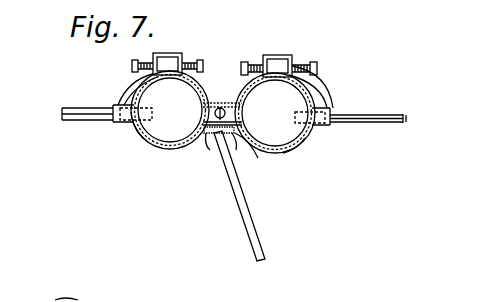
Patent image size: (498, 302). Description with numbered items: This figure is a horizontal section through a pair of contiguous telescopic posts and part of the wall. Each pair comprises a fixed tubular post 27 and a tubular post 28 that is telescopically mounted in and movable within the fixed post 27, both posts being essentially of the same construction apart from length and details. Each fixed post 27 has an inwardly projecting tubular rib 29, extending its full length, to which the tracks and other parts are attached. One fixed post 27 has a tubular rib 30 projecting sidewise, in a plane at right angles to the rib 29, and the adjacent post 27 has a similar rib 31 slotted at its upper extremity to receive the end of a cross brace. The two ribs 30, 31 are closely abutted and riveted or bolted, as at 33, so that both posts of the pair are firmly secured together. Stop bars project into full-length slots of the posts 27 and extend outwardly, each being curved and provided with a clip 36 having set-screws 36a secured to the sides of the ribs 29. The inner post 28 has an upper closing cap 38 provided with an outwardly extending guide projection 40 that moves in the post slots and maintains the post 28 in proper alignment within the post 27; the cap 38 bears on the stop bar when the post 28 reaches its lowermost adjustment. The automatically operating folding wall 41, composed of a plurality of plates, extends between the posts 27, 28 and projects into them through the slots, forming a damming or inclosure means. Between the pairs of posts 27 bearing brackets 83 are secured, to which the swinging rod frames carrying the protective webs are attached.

The fixed tubular post 27 is at (168, 150).
The telescopic tubular post 28 is at (140, 146).
The inwardly projecting tubular rib 29 is at (150, 53).
The tubular rib 30 is at (216, 104).
The tubular rib 31 is at (274, 138).
The rivet or bolt 33 is at (206, 140).
The clip 36 is at (170, 53).
The set-screw 36a is at (130, 67).
The upper closing cap 38 is at (123, 145).
The guide projection 40 is at (120, 123).
The folding wall 41 is at (378, 118).
The bearing bracket 83 is at (207, 133).